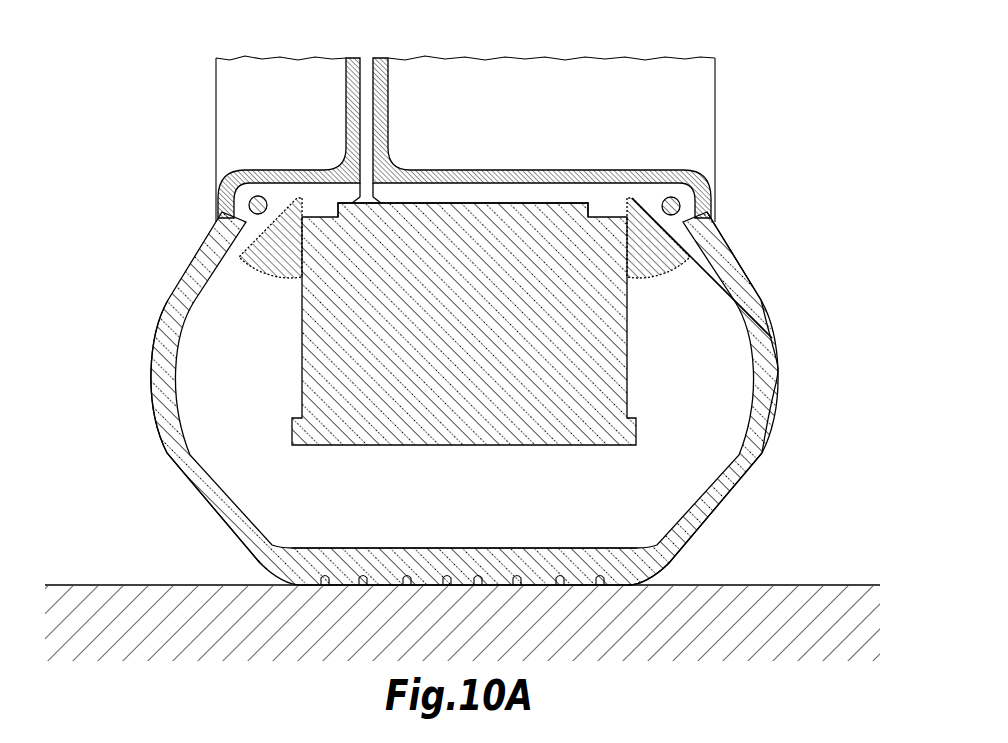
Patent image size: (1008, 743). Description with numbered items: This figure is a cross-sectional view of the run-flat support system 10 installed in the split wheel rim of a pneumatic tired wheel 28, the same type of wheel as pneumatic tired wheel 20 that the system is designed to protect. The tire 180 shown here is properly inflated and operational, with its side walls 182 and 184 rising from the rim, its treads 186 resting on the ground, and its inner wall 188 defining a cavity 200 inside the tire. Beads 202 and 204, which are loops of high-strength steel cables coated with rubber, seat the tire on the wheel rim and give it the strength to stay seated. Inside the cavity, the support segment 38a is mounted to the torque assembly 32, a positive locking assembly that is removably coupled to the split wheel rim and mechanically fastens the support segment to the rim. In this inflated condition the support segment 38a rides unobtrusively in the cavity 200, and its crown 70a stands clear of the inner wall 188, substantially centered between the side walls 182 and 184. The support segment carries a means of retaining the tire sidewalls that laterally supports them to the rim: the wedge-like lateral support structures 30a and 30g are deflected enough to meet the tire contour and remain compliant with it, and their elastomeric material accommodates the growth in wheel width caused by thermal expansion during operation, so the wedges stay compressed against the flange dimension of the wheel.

The run-flat support system 10 is at (752, 133).
The pneumatic tired wheel 28 is at (344, 135).
The torque assembly 32 is at (507, 203).
The support segment 38a is at (467, 230).
The bead 202 is at (232, 187).
The bead 204 is at (690, 201).
The lateral support structure 30a is at (300, 262).
The lateral support structure 30g is at (700, 279).
The crown 70a is at (590, 447).
The pneumatic tired wheel 20 is at (469, 398).
The side wall 182 is at (167, 453).
The tire 180 is at (760, 458).
The side wall 184 is at (774, 328).
The inner wall 188 is at (345, 573).
The cavity 200 is at (483, 511).
The treads 186 is at (583, 588).